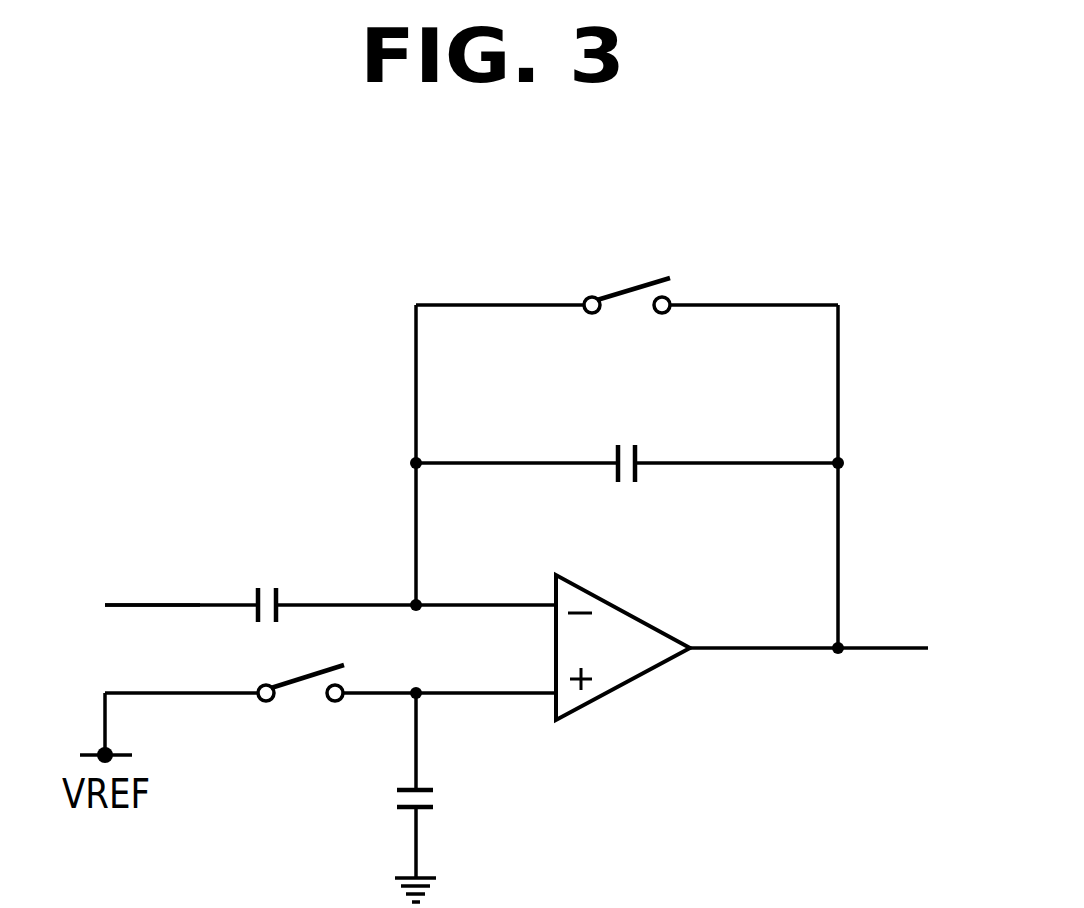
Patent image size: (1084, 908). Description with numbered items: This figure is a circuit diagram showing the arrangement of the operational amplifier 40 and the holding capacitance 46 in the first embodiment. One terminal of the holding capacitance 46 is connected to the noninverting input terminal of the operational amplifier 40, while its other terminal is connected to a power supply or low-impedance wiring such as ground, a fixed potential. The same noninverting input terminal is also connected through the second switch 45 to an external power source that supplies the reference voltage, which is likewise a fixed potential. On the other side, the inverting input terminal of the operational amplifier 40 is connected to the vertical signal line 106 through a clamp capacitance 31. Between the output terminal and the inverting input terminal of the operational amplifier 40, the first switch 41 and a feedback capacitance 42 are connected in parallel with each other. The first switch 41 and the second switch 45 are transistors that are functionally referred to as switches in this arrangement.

The vertical signal line 106 is at (132, 574).
The clamp capacitance 31 is at (268, 585).
The operational amplifier 40 is at (628, 678).
The first switch 41 is at (630, 280).
The feedback capacitance 42 is at (628, 443).
The second switch 45 is at (296, 690).
The holding capacitance 46 is at (435, 800).